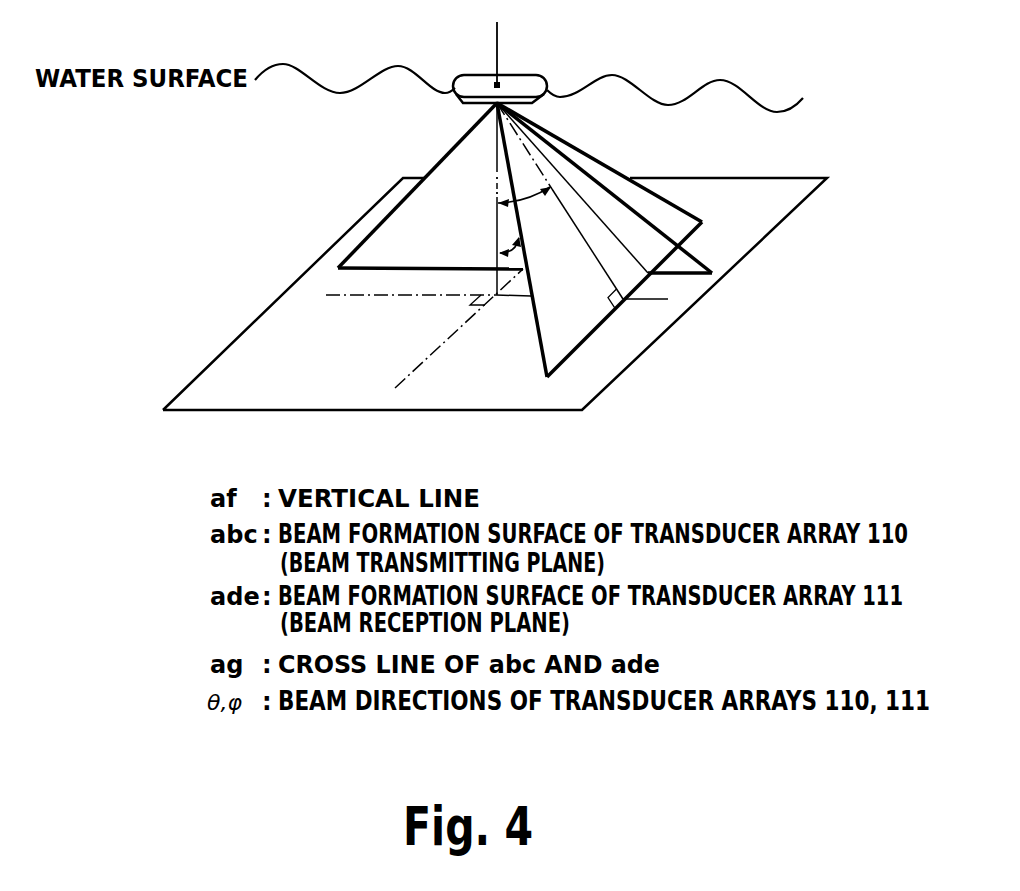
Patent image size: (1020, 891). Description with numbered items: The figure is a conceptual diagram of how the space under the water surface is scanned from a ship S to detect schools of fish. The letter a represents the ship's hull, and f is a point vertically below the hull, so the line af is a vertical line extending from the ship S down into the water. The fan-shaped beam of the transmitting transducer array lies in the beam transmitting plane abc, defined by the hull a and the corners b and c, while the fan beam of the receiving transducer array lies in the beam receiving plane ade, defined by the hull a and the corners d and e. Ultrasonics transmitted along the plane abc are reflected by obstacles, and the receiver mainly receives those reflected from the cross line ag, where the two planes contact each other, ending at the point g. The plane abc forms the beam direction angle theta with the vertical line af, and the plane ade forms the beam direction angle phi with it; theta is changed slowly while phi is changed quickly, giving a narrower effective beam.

The ship S is at (523, 74).
The ship's hull a is at (472, 114).
The vertex of beam transmitting plane abc b is at (529, 253).
The vertex of beam transmitting plane abc c is at (614, 240).
The vertex of beam receiving plane ade d is at (414, 202).
The vertex of beam receiving plane ade e is at (613, 188).
The point vertically below the ship's hull f is at (463, 245).
The end point of line ag g is at (582, 205).